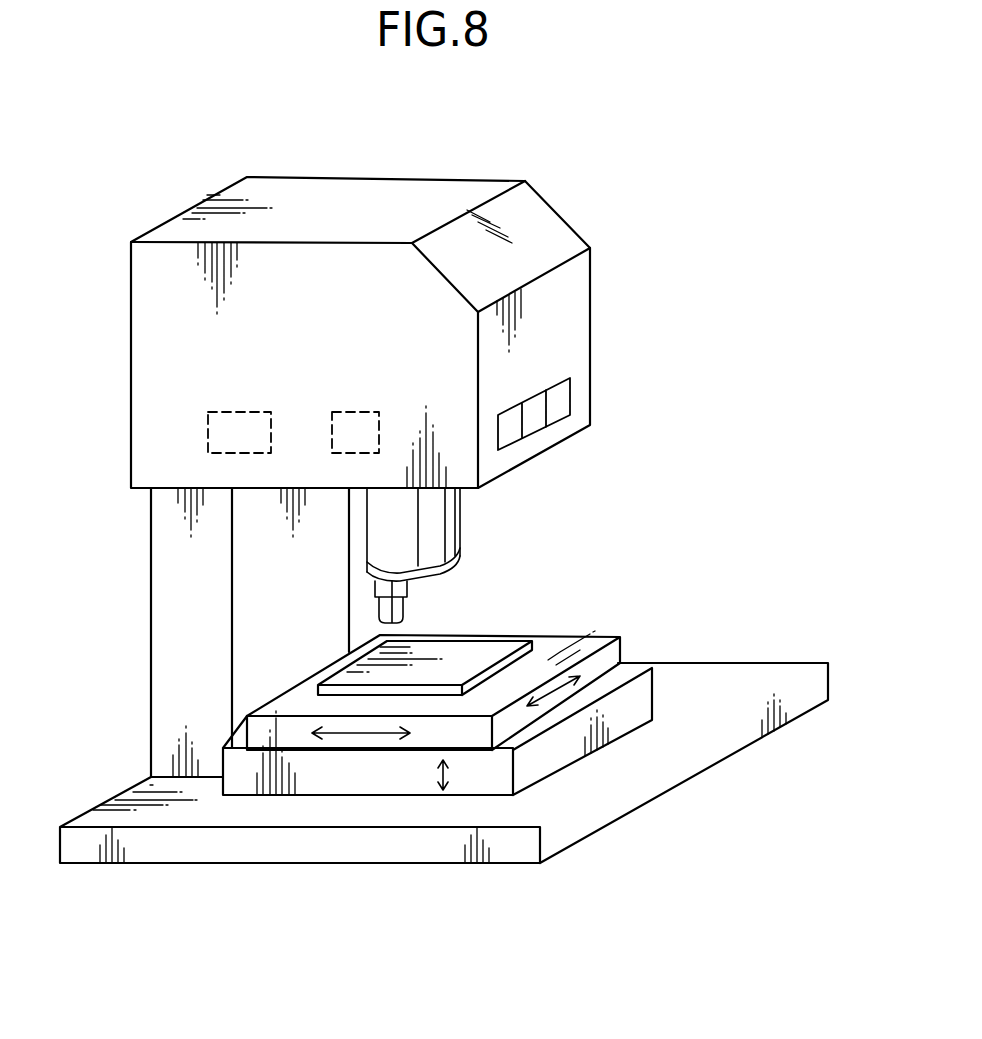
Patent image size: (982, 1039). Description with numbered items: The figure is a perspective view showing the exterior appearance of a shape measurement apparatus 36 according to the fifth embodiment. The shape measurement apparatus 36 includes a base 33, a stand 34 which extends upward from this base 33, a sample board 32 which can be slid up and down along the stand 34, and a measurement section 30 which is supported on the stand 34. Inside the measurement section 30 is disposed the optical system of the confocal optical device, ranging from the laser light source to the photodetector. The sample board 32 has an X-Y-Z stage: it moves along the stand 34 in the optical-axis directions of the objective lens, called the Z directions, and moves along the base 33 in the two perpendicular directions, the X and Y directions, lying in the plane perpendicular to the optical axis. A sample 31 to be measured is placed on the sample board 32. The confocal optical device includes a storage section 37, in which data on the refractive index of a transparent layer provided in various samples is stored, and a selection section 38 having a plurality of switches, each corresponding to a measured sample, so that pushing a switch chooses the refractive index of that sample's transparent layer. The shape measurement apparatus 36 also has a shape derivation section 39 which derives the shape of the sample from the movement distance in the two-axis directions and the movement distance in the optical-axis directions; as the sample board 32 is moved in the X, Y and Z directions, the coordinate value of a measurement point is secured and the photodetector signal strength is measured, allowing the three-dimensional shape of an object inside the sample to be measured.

The measurement section 30 is at (668, 185).
The workpiece 31 is at (485, 647).
The sample board 32 is at (672, 700).
The base 33 is at (792, 663).
The stand 34 is at (150, 595).
The shape measurement apparatus 36 is at (597, 113).
The storage section 37 is at (355, 410).
The selection section 38 is at (543, 430).
The shape derivation section 39 is at (229, 410).